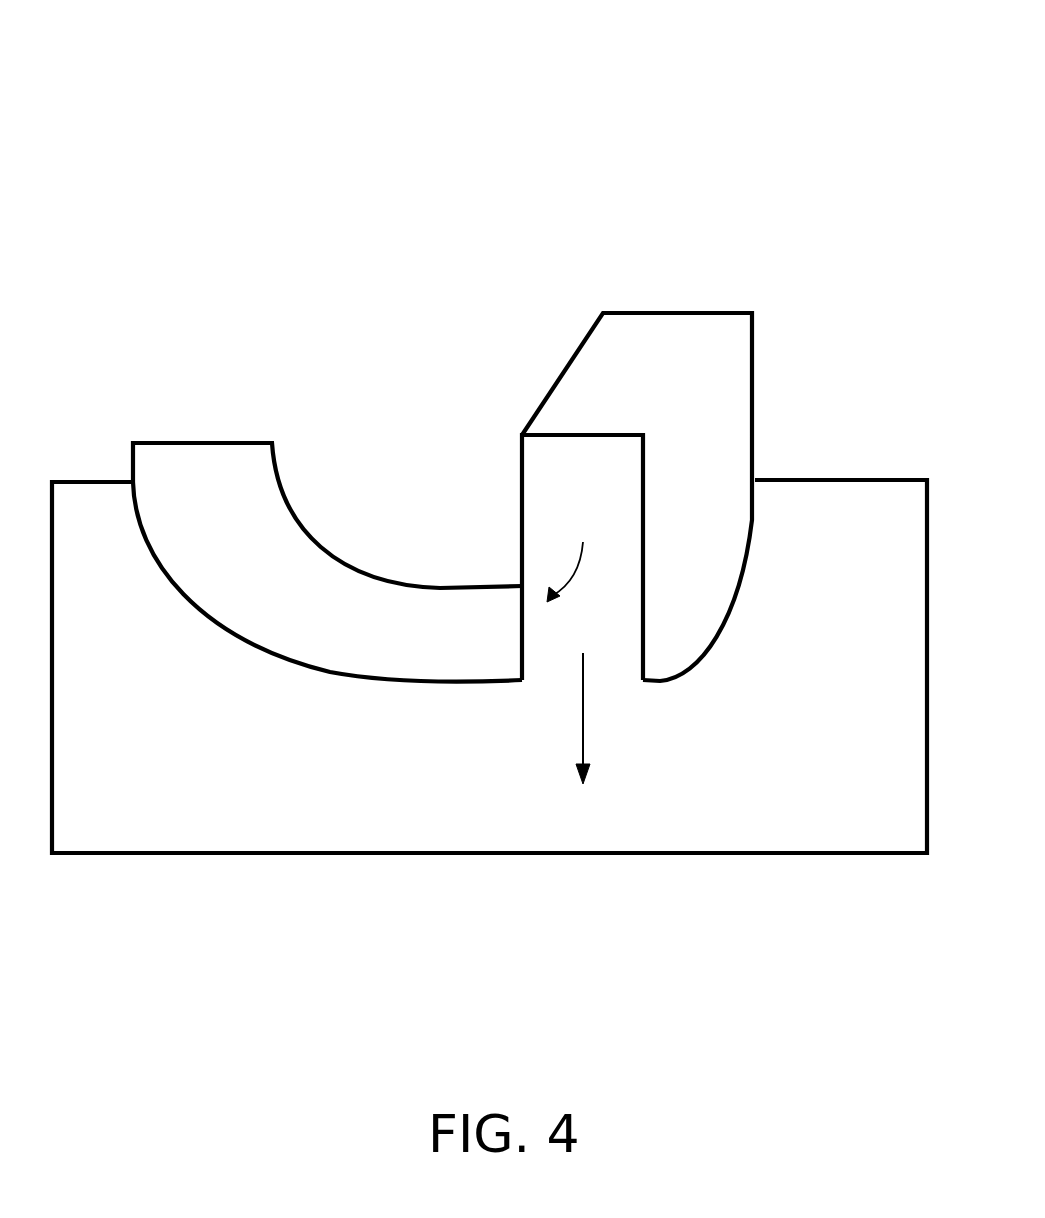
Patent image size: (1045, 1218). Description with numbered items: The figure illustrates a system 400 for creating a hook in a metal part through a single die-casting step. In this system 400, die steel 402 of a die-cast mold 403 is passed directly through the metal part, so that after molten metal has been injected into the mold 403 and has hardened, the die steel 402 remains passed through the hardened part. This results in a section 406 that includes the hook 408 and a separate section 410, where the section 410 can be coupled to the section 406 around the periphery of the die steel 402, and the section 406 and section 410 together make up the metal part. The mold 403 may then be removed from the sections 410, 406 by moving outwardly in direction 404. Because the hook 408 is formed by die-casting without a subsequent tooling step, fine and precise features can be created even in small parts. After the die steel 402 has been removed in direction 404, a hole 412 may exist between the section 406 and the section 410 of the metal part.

The system 400 is at (507, 36).
The die steel 402 is at (563, 477).
The die-cast mold 403 is at (130, 835).
The direction 404 is at (585, 734).
The section 406 is at (710, 518).
The hook 408 is at (618, 355).
The section 410 is at (215, 475).
The hole 412 is at (578, 558).